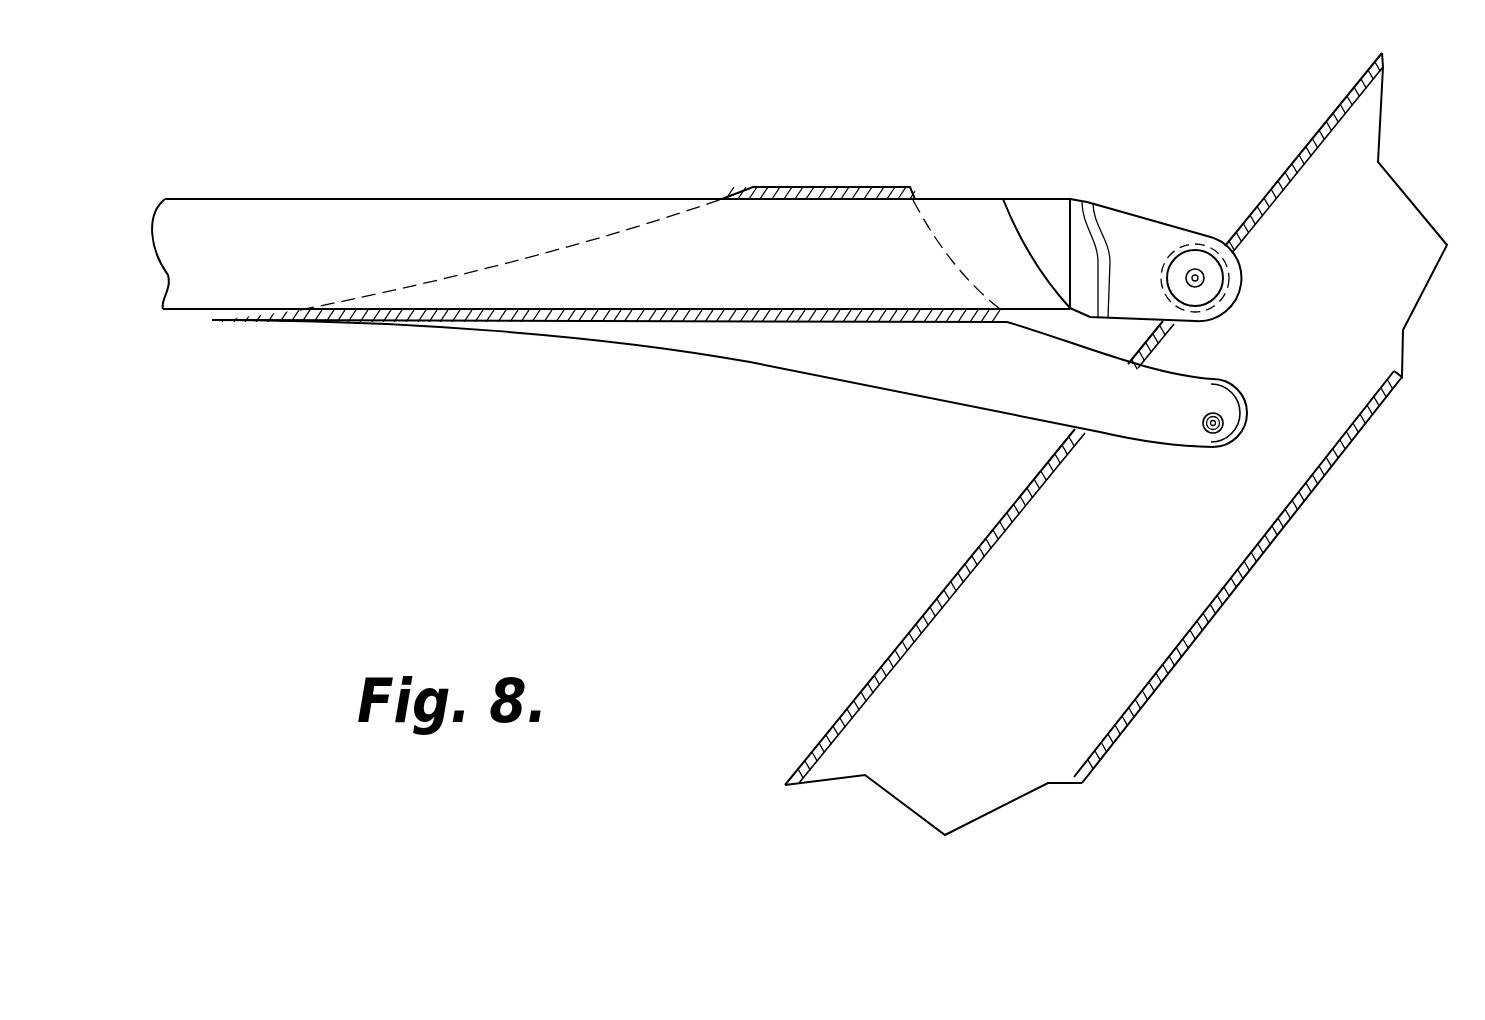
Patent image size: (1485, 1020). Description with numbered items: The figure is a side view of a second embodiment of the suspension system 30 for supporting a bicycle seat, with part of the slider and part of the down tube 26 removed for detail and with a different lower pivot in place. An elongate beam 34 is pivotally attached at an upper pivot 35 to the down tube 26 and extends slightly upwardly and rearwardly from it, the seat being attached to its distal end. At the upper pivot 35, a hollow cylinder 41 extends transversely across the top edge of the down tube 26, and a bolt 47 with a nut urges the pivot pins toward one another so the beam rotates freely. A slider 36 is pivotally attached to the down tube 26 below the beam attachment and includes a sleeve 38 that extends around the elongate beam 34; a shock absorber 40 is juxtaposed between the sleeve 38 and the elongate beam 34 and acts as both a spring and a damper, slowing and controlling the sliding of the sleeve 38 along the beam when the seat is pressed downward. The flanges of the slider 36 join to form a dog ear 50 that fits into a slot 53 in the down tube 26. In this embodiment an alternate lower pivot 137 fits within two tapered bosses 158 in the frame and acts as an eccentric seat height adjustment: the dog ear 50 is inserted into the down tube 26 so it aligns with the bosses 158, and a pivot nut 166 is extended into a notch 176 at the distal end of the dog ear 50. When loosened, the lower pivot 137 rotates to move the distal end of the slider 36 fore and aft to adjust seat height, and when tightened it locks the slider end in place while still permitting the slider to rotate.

The suspension system 30 is at (665, 87).
The elongate beam 34 is at (267, 206).
The sleeve 38 is at (827, 188).
The shock absorber 40 is at (913, 192).
The upper pivot 35 is at (1194, 225).
The hollow cylinder 41 is at (1195, 248).
The bolt 47 is at (1200, 278).
The slider 36 is at (815, 357).
The slot 53 is at (1055, 443).
The dog ear 50 is at (1117, 427).
The pivot nut 166 is at (1240, 386).
The tapered bosses 158 is at (1250, 420).
The lower pivot 137 is at (1252, 429).
The notch 176 is at (1288, 528).
The down tube 26 is at (1217, 614).